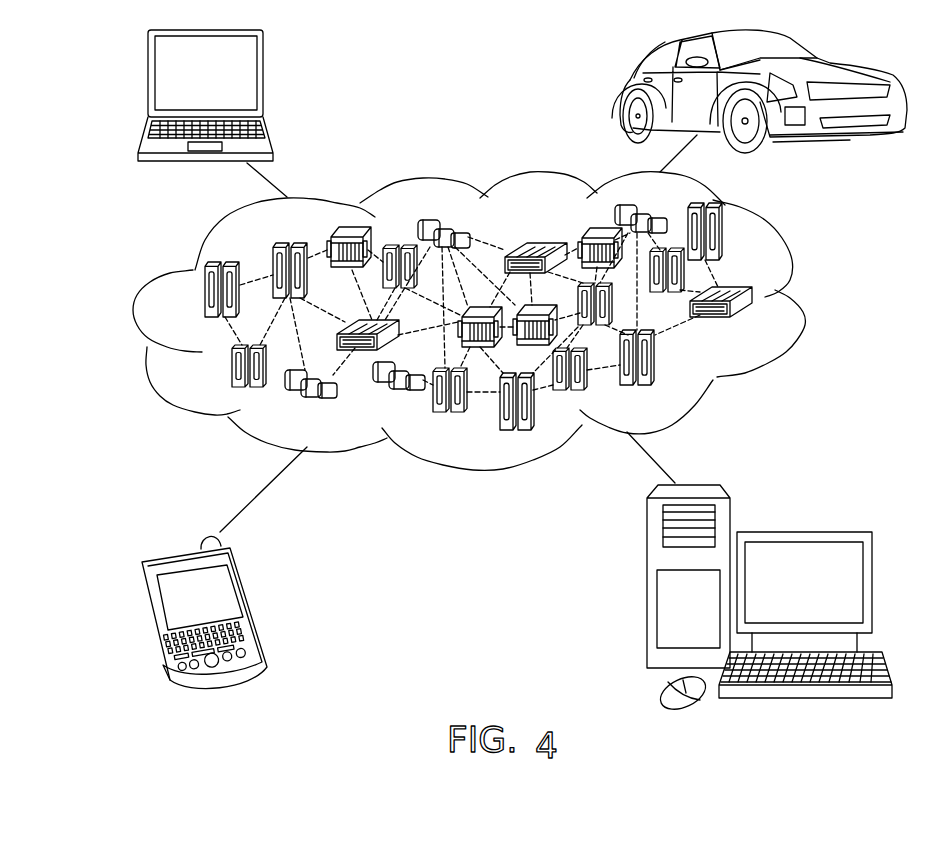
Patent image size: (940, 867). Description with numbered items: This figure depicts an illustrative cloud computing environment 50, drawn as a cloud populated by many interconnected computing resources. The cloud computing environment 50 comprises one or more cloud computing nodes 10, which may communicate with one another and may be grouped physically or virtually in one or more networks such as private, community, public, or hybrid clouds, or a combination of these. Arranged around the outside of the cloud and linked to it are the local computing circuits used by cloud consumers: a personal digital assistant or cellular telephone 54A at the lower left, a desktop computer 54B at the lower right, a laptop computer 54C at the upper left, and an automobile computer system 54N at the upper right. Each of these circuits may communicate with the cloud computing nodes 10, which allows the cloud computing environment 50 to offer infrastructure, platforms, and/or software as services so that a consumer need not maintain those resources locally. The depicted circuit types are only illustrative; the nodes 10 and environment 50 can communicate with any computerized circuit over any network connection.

The cloud computing node 10 is at (758, 324).
The cloud computing environment 50 is at (805, 298).
The personal digital assistant (PDA) or cellular telephone 54A is at (255, 603).
The desktop computer 54B is at (802, 530).
The laptop computer 54C is at (263, 80).
The automobile computer system 54N is at (622, 93).